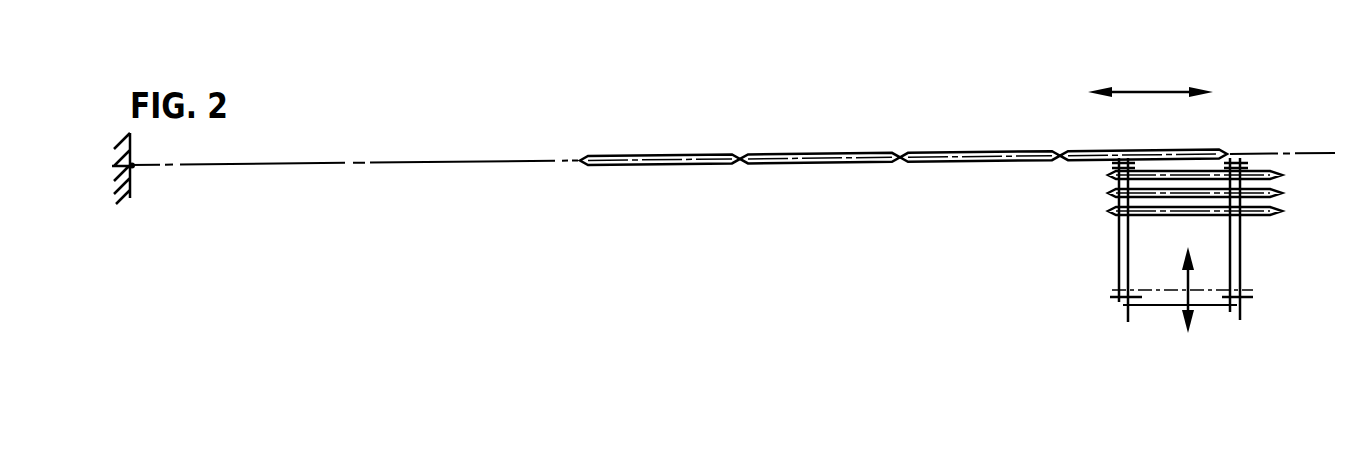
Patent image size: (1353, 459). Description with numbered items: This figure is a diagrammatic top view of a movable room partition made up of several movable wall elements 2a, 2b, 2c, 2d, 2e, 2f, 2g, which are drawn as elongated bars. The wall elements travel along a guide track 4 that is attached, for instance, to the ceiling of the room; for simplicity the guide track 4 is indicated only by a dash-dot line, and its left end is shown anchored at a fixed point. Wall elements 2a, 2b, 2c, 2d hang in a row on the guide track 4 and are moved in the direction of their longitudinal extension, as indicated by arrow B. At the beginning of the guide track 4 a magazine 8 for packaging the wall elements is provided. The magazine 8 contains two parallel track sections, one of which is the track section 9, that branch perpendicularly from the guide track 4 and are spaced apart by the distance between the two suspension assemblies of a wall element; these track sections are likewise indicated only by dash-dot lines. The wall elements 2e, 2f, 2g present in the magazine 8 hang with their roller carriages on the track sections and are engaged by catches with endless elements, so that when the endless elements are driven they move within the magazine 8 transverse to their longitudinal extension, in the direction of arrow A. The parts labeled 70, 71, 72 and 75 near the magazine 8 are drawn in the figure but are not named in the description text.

The guide track 4 is at (207, 164).
The movable wall element 2a is at (675, 155).
The movable wall element 2b is at (808, 153).
The movable wall element 2c is at (958, 152).
The movable wall element 2d is at (1133, 150).
The movable wall element 2e is at (1108, 175).
The movable wall element 2f is at (1108, 193).
The movable wall element 2g is at (1108, 212).
The connecting member 75 is at (1145, 150).
The guide post 70 is at (1242, 245).
The lower guide 71 is at (1115, 287).
The lower guide 72 is at (1242, 282).
The track section 9 is at (1118, 266).
The magazine 8 is at (1252, 309).
The arrow A is at (1192, 290).
The arrow B is at (1158, 92).